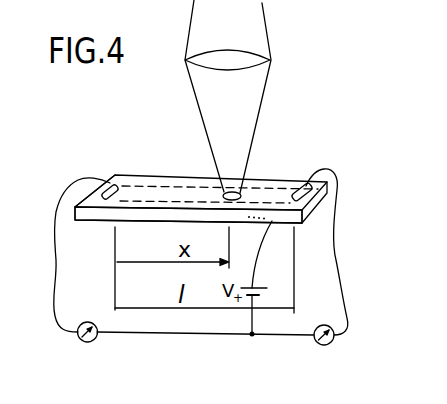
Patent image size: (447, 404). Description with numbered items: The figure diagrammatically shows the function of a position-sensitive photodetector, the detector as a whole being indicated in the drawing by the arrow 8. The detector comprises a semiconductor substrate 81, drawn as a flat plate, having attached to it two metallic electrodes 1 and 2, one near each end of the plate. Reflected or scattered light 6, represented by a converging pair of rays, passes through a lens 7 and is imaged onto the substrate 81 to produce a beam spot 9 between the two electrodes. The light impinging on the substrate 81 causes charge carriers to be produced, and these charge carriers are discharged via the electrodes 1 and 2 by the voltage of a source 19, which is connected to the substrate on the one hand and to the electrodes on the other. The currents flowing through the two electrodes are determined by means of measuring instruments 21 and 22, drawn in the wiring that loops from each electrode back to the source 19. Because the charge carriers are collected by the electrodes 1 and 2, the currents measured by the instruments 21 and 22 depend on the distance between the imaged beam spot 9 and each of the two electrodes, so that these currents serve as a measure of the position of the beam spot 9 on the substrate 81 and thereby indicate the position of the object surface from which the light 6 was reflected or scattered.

The metallic electrode 1 is at (115, 178).
The metallic electrode 2 is at (317, 182).
The reflected or scattered light 6 is at (259, 27).
The lens 7 is at (270, 60).
The photoconductive plate 8 is at (157, 147).
The semiconductor substrate 81 is at (92, 216).
The beam spot 9 is at (241, 195).
The voltage source 19 is at (267, 288).
The measuring instrument 21 is at (97, 342).
The measuring instrument 22 is at (328, 345).